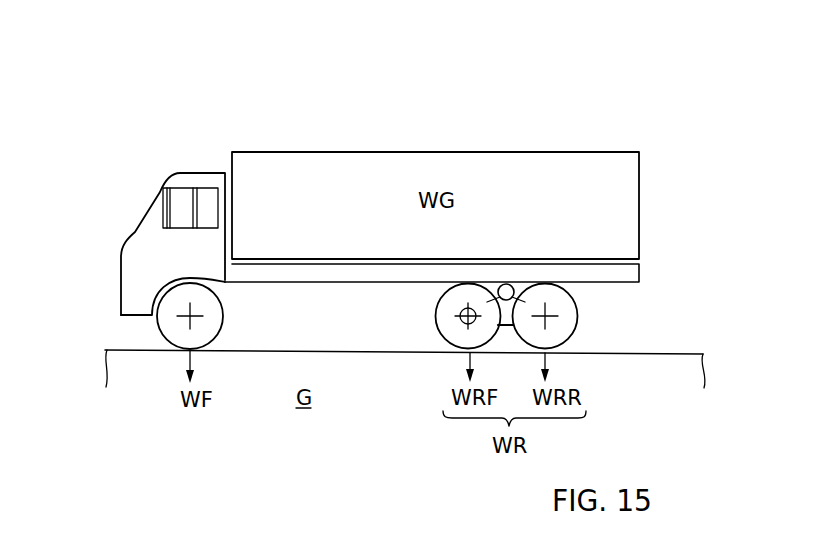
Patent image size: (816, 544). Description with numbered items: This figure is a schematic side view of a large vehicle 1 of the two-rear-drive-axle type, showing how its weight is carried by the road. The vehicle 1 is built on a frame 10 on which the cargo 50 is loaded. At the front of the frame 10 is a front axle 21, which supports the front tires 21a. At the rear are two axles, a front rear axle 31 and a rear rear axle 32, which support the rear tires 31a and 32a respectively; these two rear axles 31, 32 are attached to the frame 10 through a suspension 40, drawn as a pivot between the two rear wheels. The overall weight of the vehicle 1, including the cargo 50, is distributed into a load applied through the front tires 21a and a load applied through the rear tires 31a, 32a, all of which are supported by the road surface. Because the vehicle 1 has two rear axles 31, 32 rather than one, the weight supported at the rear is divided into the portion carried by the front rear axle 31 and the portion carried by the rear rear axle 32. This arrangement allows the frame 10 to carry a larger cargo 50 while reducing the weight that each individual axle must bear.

The large vehicle 1 is at (542, 118).
The frame 10 is at (632, 273).
The front axle 21 is at (197, 305).
The front tires 21a is at (212, 332).
The front rear axle 31 is at (459, 313).
The rear tire 31a is at (443, 332).
The rear rear axle 32 is at (573, 305).
The rear tire 32a is at (573, 330).
The suspension 40 is at (510, 284).
The cargo 50 is at (333, 210).